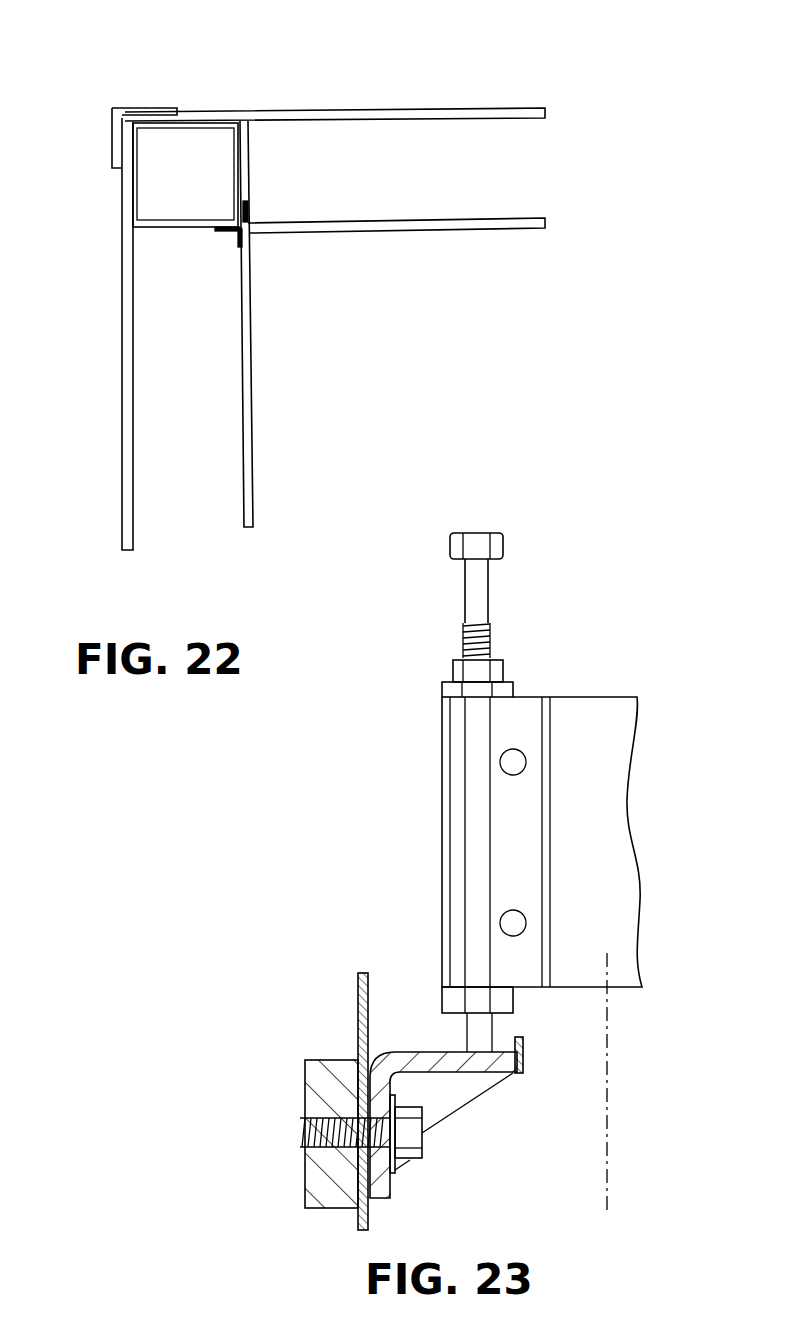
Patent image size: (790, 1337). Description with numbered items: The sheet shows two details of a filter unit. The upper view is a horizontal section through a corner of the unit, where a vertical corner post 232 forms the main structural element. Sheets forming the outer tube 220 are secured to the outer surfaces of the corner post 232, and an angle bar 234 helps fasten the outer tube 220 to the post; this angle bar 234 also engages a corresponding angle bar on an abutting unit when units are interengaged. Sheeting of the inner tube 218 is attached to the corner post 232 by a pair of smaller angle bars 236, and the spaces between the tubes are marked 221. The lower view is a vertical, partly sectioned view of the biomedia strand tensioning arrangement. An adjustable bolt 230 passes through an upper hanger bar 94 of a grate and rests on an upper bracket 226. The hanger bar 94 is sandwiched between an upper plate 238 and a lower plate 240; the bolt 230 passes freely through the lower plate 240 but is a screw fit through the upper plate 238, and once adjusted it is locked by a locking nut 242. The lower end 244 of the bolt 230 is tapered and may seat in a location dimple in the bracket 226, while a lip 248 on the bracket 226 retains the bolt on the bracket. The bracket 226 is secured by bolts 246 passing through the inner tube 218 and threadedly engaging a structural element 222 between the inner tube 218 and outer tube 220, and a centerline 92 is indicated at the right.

In FIG. 23, the centerline / vehicle reference 92 is at (608, 1110).
In FIG. 23, the upper hanger bar 94 is at (597, 713).
In FIG. 22, the inner tube 218 is at (255, 355).
In FIG. 23, the inner tube 218 is at (360, 1030).
In FIG. 22, the outer tube 220 is at (372, 108).
In FIG. 22, the frame member 221 is at (467, 186).
In FIG. 23, the structural element 222 is at (322, 1078).
In FIG. 23, the upper bracket 226 is at (421, 1050).
In FIG. 23, the adjustable bolt 230 is at (455, 597).
In FIG. 22, the corner post 232 is at (233, 158).
In FIG. 22, the angle bar 234 is at (155, 107).
In FIG. 22, the smaller angle bar 236 is at (275, 208).
In FIG. 23, the upper plate 238 is at (440, 686).
In FIG. 23, the lower plate 240 is at (517, 1002).
In FIG. 23, the locking nut 242 is at (453, 672).
In FIG. 23, the tapered lower end 244 is at (515, 1037).
In FIG. 23, the bolt 246 is at (423, 1133).
In FIG. 23, the lip 248 is at (525, 1043).